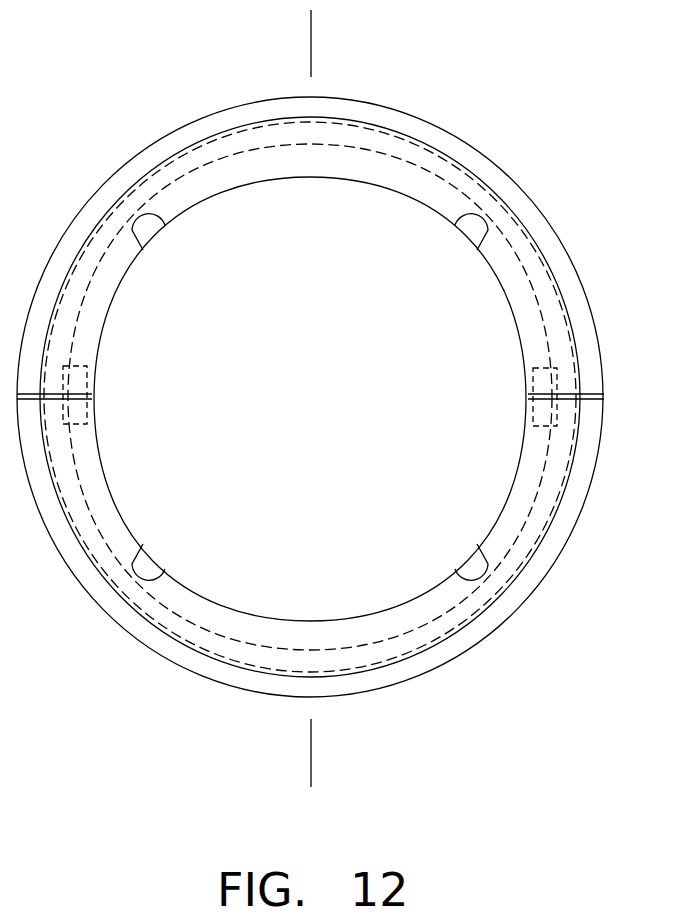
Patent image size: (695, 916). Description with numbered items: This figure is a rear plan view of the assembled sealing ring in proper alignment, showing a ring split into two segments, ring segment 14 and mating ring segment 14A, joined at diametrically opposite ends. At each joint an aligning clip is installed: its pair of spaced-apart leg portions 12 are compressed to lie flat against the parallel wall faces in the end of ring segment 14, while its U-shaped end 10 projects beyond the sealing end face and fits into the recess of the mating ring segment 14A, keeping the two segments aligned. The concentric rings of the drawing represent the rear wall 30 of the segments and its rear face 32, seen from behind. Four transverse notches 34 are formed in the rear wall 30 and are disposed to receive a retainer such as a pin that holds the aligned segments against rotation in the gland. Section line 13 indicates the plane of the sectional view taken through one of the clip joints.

The U-shaped end 10 is at (83, 352).
The leg portions 12 is at (78, 408).
The section line 13- 13 is at (311, 42).
The ring segment 14 is at (188, 678).
The mating ring segment 14A is at (355, 200).
The rear wall 30 is at (117, 493).
The rear face 32 is at (267, 635).
The transverse notches 34 is at (160, 242).